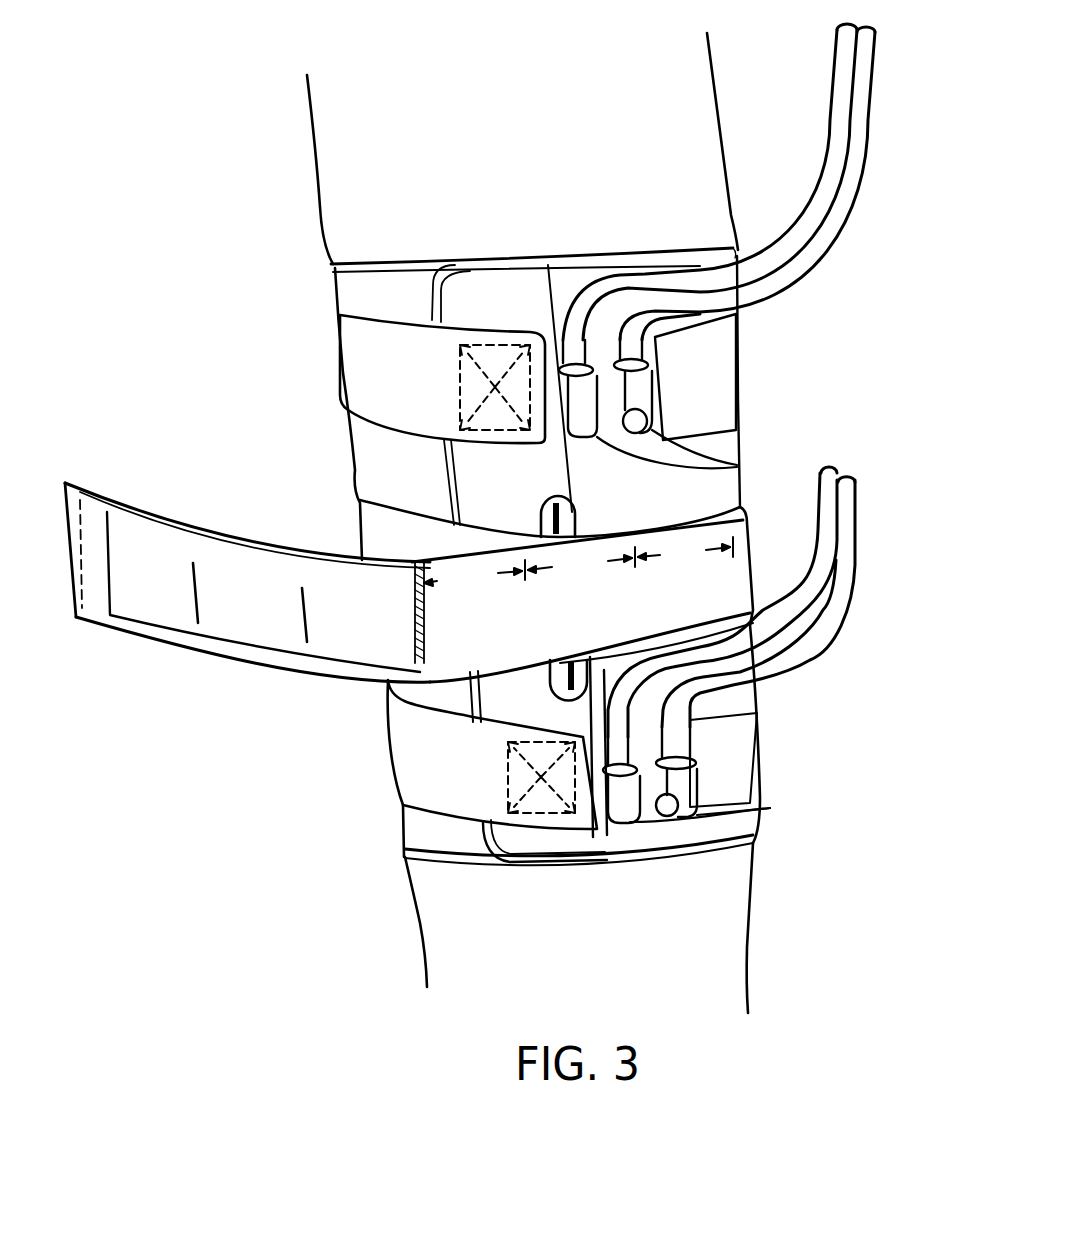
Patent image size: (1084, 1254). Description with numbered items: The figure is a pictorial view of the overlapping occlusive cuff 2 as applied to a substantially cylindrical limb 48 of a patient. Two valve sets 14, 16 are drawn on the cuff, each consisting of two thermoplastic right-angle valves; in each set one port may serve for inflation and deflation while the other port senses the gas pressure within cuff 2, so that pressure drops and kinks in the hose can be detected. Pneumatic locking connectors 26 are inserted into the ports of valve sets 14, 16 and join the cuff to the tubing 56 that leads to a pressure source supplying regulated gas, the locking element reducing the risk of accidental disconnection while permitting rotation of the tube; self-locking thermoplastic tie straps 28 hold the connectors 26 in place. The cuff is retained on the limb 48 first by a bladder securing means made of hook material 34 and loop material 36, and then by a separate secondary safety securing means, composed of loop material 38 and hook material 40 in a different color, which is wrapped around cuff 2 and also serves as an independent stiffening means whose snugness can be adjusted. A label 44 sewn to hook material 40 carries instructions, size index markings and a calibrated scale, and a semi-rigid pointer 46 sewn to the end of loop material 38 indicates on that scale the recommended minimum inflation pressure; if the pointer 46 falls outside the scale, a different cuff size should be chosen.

The overlapping occlusive cuff 2 is at (440, 818).
The valve set 14 is at (737, 467).
The valve set 16 is at (770, 808).
The pneumatic locking connectors 26 is at (693, 728).
The self-locking thermoplastic tie straps 28 is at (690, 763).
The hook material 34 is at (370, 388).
The loop material 36 is at (716, 370).
The loop material 38 is at (370, 525).
The hook material 40 is at (100, 605).
The label 44 is at (170, 607).
The pointer 46 is at (548, 663).
The limb 48 is at (360, 218).
The tubing 56 is at (857, 540).